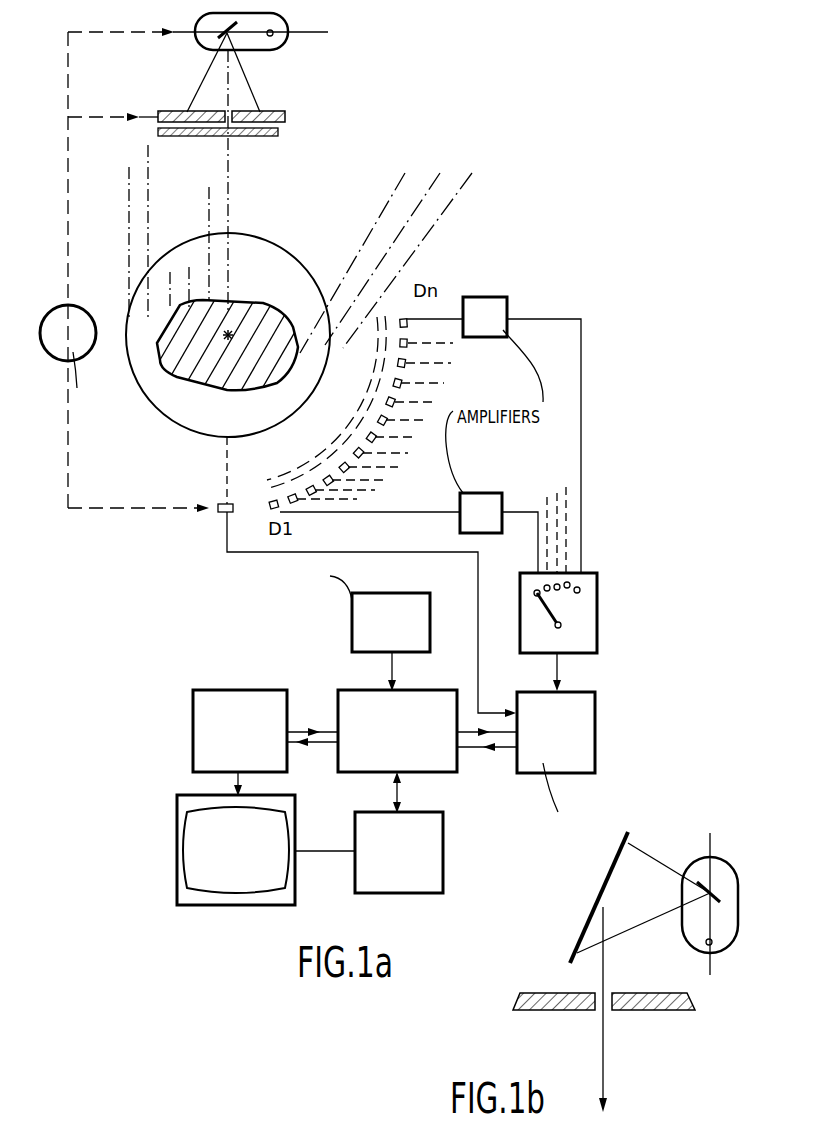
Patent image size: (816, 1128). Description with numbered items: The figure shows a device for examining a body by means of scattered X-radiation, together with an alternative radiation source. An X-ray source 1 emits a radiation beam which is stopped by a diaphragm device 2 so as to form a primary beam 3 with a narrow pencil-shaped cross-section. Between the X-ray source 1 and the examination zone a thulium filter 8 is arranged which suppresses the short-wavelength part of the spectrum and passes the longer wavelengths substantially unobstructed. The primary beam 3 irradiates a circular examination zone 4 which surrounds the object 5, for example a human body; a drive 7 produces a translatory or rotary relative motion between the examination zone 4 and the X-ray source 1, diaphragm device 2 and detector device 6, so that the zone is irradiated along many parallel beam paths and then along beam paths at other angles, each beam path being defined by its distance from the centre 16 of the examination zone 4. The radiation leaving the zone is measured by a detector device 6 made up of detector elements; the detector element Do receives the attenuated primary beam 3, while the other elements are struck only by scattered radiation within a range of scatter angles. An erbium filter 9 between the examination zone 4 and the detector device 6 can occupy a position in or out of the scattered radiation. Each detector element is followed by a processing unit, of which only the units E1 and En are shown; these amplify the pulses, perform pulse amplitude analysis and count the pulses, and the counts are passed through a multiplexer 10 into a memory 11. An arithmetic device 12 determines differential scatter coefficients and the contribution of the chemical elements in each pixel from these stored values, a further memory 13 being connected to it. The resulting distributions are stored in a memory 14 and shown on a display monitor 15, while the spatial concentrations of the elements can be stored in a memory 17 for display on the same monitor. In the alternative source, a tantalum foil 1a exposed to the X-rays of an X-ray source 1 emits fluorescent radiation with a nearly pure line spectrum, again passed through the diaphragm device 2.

In FIG. 1A, the X-ray source 1 is at (273, 23).
In FIG. 1B, the X-ray source 1 is at (730, 895).
In FIG. 1B, the tantalum foil 1a is at (607, 870).
In FIG. 1A, the diaphragm device 2 is at (277, 111).
In FIG. 1B, the diaphragm device 2 is at (670, 1010).
In FIG. 1A, the primary beam 3 is at (228, 163).
In FIG. 1A, the examination zone 4 is at (288, 249).
In FIG. 1A, the object 5 is at (263, 305).
In FIG. 1A, the detector device 6 is at (398, 460).
In FIG. 1A, the drive 7 is at (80, 317).
In FIG. 1A, the thulium filter 8 is at (278, 132).
In FIG. 1A, the erbium filter 9 is at (353, 415).
In FIG. 1A, the multiplexer 10 is at (588, 622).
In FIG. 1A, the memory 11 is at (595, 728).
In FIG. 1A, the arithmetic device 12 is at (425, 698).
In FIG. 1A, the memory C(zi,x) R(zi,x) 13 is at (352, 619).
In FIG. 1A, the memory 14 is at (249, 697).
In FIG. 1A, the display monitor 15 is at (285, 808).
In FIG. 1A, the centre 16 is at (230, 330).
In FIG. 1A, the memory 17 is at (435, 853).
In FIG. 1A, the detector element Do is at (218, 513).
In FIG. 1A, the processing unit En is at (490, 304).
In FIG. 1A, the processing unit E1 is at (482, 503).